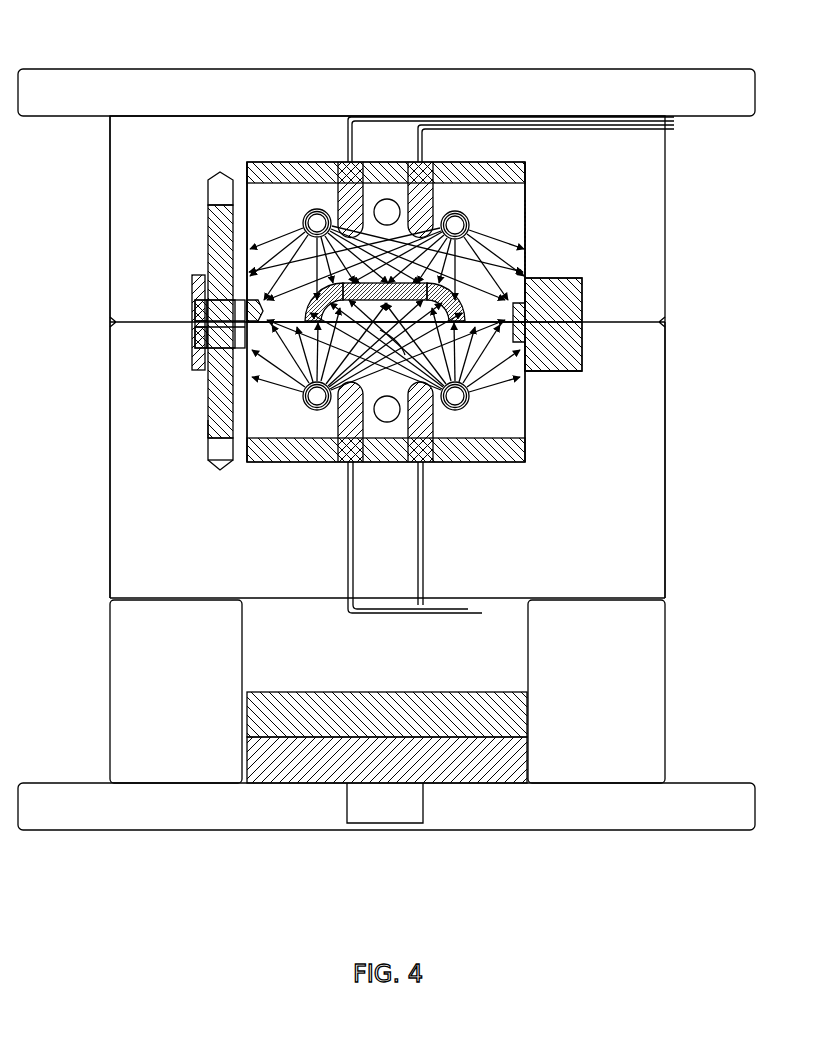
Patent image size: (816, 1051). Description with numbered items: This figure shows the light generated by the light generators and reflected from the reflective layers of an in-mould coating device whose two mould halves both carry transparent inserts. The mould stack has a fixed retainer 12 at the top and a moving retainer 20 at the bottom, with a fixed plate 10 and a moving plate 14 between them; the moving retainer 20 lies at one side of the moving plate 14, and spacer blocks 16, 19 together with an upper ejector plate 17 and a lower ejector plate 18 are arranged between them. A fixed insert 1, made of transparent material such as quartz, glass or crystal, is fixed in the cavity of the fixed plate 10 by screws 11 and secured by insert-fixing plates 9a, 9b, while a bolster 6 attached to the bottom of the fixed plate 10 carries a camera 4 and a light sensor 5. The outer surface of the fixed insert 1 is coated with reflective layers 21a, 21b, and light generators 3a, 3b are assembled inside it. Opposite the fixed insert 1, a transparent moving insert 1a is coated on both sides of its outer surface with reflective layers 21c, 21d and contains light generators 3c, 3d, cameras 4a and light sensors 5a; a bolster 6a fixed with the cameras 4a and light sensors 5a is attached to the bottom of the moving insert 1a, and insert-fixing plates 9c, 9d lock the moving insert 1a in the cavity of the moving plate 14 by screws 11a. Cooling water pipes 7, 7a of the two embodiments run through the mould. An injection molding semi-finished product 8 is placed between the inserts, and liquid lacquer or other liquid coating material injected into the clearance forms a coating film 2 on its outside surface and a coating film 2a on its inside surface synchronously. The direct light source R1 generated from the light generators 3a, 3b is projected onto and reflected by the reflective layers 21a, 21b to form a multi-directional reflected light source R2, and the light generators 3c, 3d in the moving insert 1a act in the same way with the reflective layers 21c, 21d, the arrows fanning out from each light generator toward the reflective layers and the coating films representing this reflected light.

The fixed insert 1 is at (262, 193).
The moving insert 1a is at (500, 407).
The coating film 2 is at (312, 290).
The coating film 2a is at (297, 318).
The light generator 3a is at (317, 208).
The light generator 3b is at (455, 210).
The light generator 3c is at (303, 396).
The light generator 3d is at (472, 393).
The camera 4 is at (357, 172).
The camera 4a is at (350, 448).
The light sensor 5 is at (427, 172).
The light sensor 5a is at (425, 417).
The bolster 6 is at (520, 165).
The bolster 6a is at (511, 456).
The cooling water pipe 7 is at (387, 198).
The cooling water pipe 7a is at (513, 322).
The injection molding semi-finished product 8 is at (513, 175).
The insert-fixing plate 9a is at (205, 290).
The insert-fixing plate 9b is at (565, 290).
The insert-fixing plate 9c is at (200, 360).
The insert-fixing plate 9d is at (569, 356).
The fixed plate 10 is at (140, 213).
The screw 11 is at (235, 197).
The screw 11a is at (217, 423).
The fixed retainer 12 is at (80, 78).
The moving plate 14 is at (150, 525).
The spacer block 16 is at (635, 703).
The upper ejector plate 17 is at (455, 718).
The lower ejector plate 18 is at (310, 760).
The spacer block 19 is at (150, 690).
The moving retainer 20 is at (87, 800).
The reflective layer 21a is at (247, 200).
The reflective layer 21b is at (528, 218).
The reflective layer 21c is at (243, 372).
The reflective layer 21d is at (526, 378).
The direct light source R1 is at (400, 358).
The multi-directional reflected light source R2 is at (247, 317).